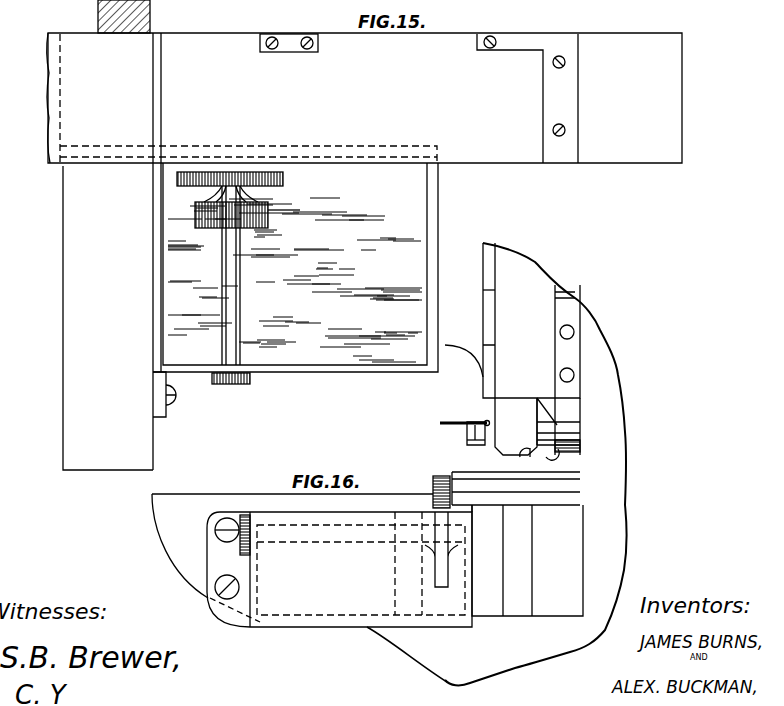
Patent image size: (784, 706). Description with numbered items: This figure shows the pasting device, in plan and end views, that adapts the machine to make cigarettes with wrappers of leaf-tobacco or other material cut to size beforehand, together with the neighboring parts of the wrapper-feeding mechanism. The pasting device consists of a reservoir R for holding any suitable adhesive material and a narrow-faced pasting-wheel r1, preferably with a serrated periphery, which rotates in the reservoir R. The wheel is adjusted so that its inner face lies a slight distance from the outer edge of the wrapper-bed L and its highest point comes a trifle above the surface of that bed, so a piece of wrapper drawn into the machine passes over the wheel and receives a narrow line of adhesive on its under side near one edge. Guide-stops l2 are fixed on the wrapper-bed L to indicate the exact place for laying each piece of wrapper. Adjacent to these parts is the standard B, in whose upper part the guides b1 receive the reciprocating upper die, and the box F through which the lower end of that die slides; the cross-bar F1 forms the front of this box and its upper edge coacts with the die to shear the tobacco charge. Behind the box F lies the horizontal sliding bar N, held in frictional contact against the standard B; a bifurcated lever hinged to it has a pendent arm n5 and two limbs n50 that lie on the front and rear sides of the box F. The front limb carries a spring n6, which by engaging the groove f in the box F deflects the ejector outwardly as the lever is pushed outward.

In FIG. 15, the wrapper-bed L is at (364, 251).
In FIG. 16, the wrapper-bed L is at (517, 544).
In FIG. 15, the guide-stops l2 is at (293, 36).
In FIG. 16, the guide-stops l2 is at (473, 478).
In FIG. 15, the standard B is at (119, 318).
In FIG. 16, the standard B is at (531, 349).
In FIG. 15, the reservoir R is at (428, 211).
In FIG. 16, the reservoir R is at (339, 569).
In FIG. 15, the gear r1 is at (283, 180).
In FIG. 16, the gear r1 is at (441, 476).
In FIG. 16, the guides b1 is at (488, 290).
In FIG. 16, the cross-bar F1 is at (475, 368).
In FIG. 16, the box F is at (502, 426).
In FIG. 16, the sliding bar N is at (558, 426).
In FIG. 16, the spring n6 is at (455, 420).
In FIG. 16, the groove f is at (475, 421).
In FIG. 16, the limbs n50 is at (467, 441).
In FIG. 16, the pendent arm n5 is at (532, 452).